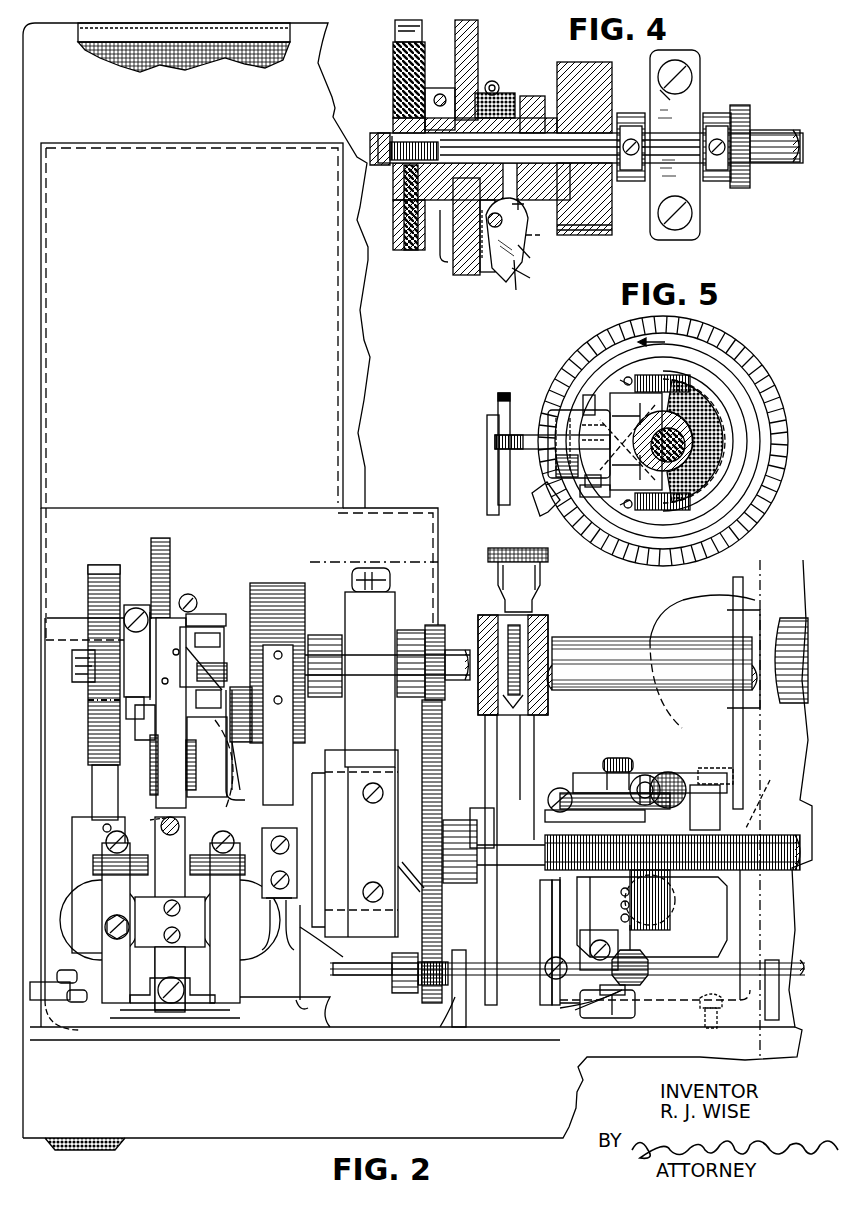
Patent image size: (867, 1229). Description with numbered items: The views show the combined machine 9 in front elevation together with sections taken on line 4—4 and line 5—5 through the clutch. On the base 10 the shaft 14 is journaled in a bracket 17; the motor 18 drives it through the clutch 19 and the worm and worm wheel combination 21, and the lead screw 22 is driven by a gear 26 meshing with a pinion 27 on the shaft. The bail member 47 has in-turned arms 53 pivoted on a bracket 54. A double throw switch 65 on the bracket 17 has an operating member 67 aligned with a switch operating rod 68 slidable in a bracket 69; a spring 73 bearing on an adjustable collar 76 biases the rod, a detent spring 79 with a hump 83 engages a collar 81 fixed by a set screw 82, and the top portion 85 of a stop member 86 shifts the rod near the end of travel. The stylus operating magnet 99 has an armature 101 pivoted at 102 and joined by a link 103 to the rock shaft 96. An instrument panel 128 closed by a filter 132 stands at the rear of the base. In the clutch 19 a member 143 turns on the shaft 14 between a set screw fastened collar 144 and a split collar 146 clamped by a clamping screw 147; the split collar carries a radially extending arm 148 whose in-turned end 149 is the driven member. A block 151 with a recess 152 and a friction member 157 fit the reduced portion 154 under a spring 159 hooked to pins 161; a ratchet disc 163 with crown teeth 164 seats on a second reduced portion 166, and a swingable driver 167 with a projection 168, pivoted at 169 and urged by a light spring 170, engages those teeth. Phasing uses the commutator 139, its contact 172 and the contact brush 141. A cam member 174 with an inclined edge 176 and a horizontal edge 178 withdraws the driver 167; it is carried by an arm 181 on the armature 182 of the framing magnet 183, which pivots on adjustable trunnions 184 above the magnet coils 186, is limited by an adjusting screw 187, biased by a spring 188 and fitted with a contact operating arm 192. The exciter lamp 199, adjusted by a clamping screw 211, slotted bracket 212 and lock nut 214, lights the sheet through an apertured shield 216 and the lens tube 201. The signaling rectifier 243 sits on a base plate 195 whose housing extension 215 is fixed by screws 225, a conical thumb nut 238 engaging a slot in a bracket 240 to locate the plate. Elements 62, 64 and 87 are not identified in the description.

In FIG. 4, the section line 5— 5 is at (516, 112).
In FIG. 2, the section line 5— 5 is at (192, 526).
In FIG. 2, the section line 4— 4 is at (458, 574).
In FIG. 2, the combined machine 9 is at (200, 1150).
In FIG. 2, the base or frame 10 is at (285, 1138).
In FIG. 4, the shaft 14 is at (776, 140).
In FIG. 2, the shaft 14 is at (592, 636).
In FIG. 4, the bracket 17 is at (692, 60).
In FIG. 2, the bracket 17 is at (390, 600).
In FIG. 2, the motor 18 is at (416, 892).
In FIG. 4, the clutch 19 is at (415, 318).
In FIG. 4, the worm and worm wheel combination 21 is at (584, 240).
In FIG. 2, the worm and worm wheel combination 21 is at (262, 600).
In FIG. 2, the lead screw 22 is at (660, 838).
In FIG. 2, the gear 26 is at (445, 725).
In FIG. 4, the pinion 27 is at (738, 108).
In FIG. 2, the pinion 27 is at (445, 695).
In FIG. 2, the bail member 47 is at (770, 820).
In FIG. 2, the in-turned arms 53 is at (495, 830).
In FIG. 2, the bracket 54 is at (473, 820).
In FIG. 2, the shaft 62 is at (772, 962).
In FIG. 2, the screw 64 is at (692, 1018).
In FIG. 2, the double throw switch 65 is at (376, 846).
In FIG. 2, the operating member 67 is at (298, 998).
In FIG. 2, the switch operating rod 68 is at (390, 975).
In FIG. 2, the bracket 69 is at (480, 1022).
In FIG. 2, the spring 73 is at (454, 952).
In FIG. 2, the adjustable collar 76 is at (394, 963).
In FIG. 2, the detent spring 79 is at (575, 1018).
In FIG. 2, the collar 81 is at (640, 985).
In FIG. 2, the set screw 82 is at (634, 932).
In FIG. 2, the hump 83 is at (616, 990).
In FIG. 2, the top portion 85 is at (541, 916).
In FIG. 2, the stop member 86 is at (552, 938).
In FIG. 2, the screw 87 is at (548, 962).
In FIG. 2, the rock shaft 96 is at (802, 978).
In FIG. 2, the stylus operating magnet 99 is at (712, 900).
In FIG. 2, the armature 101 is at (670, 912).
In FIG. 2, the link 103 is at (625, 940).
In FIG. 2, the pivot 102 is at (605, 806).
In FIG. 2, the instrument panel 128 is at (368, 402).
In FIG. 2, the filter or air purifying member 132 is at (148, 64).
In FIG. 4, the commutator 139 is at (393, 68).
In FIG. 2, the commutator 139 is at (100, 568).
In FIG. 4, the contact brush 141 is at (396, 36).
In FIG. 2, the contact brush 141 is at (100, 798).
In FIG. 4, the member 143 is at (550, 96).
In FIG. 4, the set screw fastened collar 144 is at (632, 126).
In FIG. 4, the split collar 146 is at (456, 100).
In FIG. 2, the split collar 146 is at (156, 615).
In FIG. 4, the clamping screw 147 is at (428, 98).
In FIG. 2, the clamping screw 147 is at (142, 608).
In FIG. 4, the radially extending arm 148 is at (440, 245).
In FIG. 5, the radially extending arm 148 is at (575, 515).
In FIG. 2, the radially extending arm 148 is at (138, 728).
In FIG. 4, the in-turned end 149 is at (448, 268).
In FIG. 5, the in-turned end 149 is at (540, 505).
In FIG. 2, the in-turned end 149 is at (178, 751).
In FIG. 4, the block 151 is at (520, 238).
In FIG. 5, the block 151 is at (620, 393).
In FIG. 4, the recess 152 is at (512, 208).
In FIG. 4, the reduced portion 154 is at (515, 112).
In FIG. 5, the reduced portion 154 is at (652, 408).
In FIG. 4, the friction member 157 is at (492, 80).
In FIG. 5, the friction member 157 is at (760, 510).
In FIG. 4, the spring 159 is at (503, 72).
In FIG. 5, the spring 159 is at (715, 330).
In FIG. 5, the pins 161 is at (620, 328).
In FIG. 2, the pins 161 is at (187, 595).
In FIG. 4, the ratchet disc 163 is at (465, 275).
In FIG. 5, the ratchet disc 163 is at (740, 362).
In FIG. 2, the ratchet disc 163 is at (163, 540).
In FIG. 4, the crown teeth 164 is at (487, 272).
In FIG. 5, the crown teeth 164 is at (740, 400).
In FIG. 4, the second reduced portion 166 is at (432, 148).
In FIG. 4, the swingable driver 167 is at (514, 292).
In FIG. 5, the swingable driver 167 is at (520, 450).
In FIG. 2, the swingable driver 167 is at (232, 656).
In FIG. 4, the projection 168 is at (494, 278).
In FIG. 4, the pivot 169 is at (524, 274).
In FIG. 5, the pivot 169 is at (585, 392).
In FIG. 2, the pivot 169 is at (205, 612).
In FIG. 4, the light spring 170 is at (528, 252).
In FIG. 5, the light spring 170 is at (590, 395).
In FIG. 2, the light spring 170 is at (222, 632).
In FIG. 4, the contact 172 is at (400, 250).
In FIG. 2, the contact 172 is at (98, 653).
In FIG. 5, the cam member 174 is at (498, 398).
In FIG. 2, the cam member 174 is at (172, 615).
In FIG. 5, the inclined edge 176 is at (505, 430).
In FIG. 2, the inclined edge 176 is at (210, 624).
In FIG. 2, the horizontal edge 178 is at (160, 731).
In FIG. 5, the arm 181 is at (488, 478).
In FIG. 2, the arm 181 is at (196, 766).
In FIG. 2, the armature 182 is at (170, 870).
In FIG. 2, the phasing or framing magnet 183 is at (161, 1035).
In FIG. 2, the adjustable trunnions 184 is at (200, 855).
In FIG. 2, the magnet coils 186 is at (150, 948).
In FIG. 2, the adjusting screw 187 is at (180, 1005).
In FIG. 2, the spring 188 is at (180, 820).
In FIG. 2, the contact operating arm 192 is at (238, 750).
In FIG. 2, the base plate 195 is at (318, 620).
In FIG. 2, the exciter lamp 199 is at (665, 608).
In FIG. 2, the lens tube 201 is at (790, 585).
In FIG. 2, the clamping screw 211 is at (630, 768).
In FIG. 2, the slotted bracket 212 is at (572, 790).
In FIG. 2, the lock nut 214 is at (668, 772).
In FIG. 2, the extension 215 is at (45, 790).
In FIG. 2, the apertured shield 216 is at (735, 728).
In FIG. 2, the screws 225 is at (52, 1016).
In FIG. 2, the conical thumb nut 238 is at (528, 595).
In FIG. 2, the bracket 240 is at (480, 618).
In FIG. 2, the signaling rectifier 243 is at (200, 351).